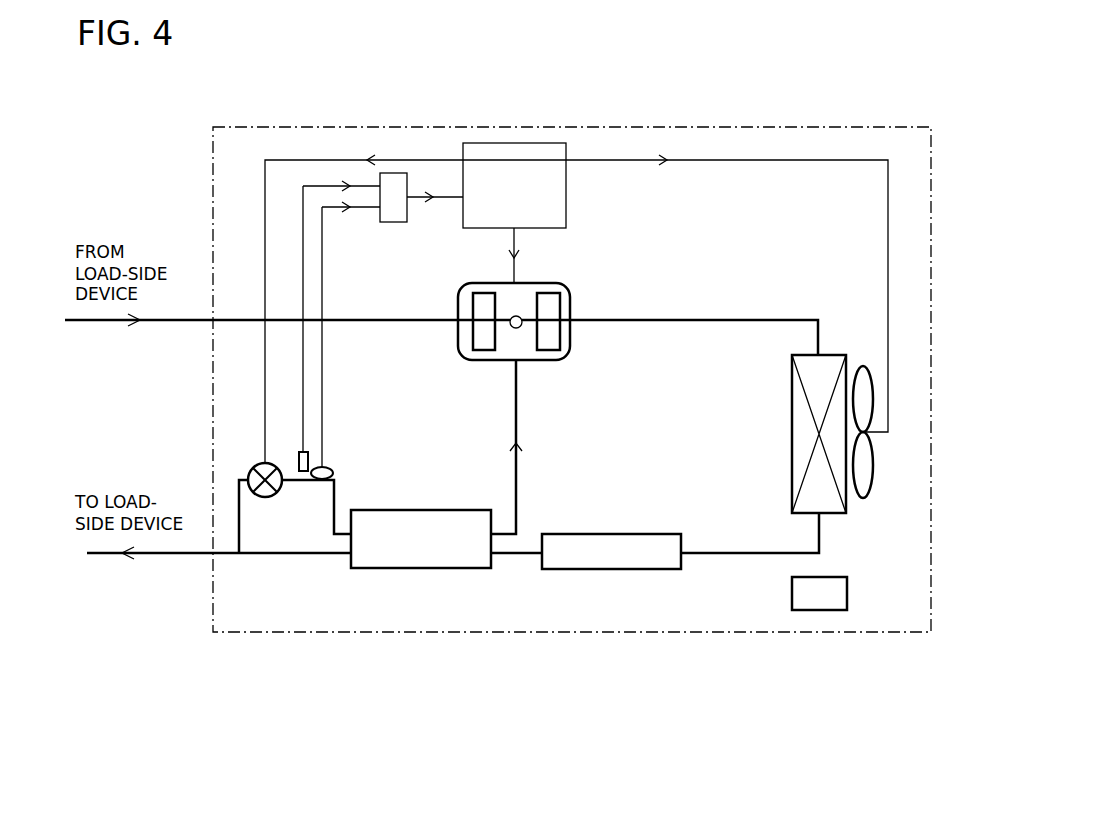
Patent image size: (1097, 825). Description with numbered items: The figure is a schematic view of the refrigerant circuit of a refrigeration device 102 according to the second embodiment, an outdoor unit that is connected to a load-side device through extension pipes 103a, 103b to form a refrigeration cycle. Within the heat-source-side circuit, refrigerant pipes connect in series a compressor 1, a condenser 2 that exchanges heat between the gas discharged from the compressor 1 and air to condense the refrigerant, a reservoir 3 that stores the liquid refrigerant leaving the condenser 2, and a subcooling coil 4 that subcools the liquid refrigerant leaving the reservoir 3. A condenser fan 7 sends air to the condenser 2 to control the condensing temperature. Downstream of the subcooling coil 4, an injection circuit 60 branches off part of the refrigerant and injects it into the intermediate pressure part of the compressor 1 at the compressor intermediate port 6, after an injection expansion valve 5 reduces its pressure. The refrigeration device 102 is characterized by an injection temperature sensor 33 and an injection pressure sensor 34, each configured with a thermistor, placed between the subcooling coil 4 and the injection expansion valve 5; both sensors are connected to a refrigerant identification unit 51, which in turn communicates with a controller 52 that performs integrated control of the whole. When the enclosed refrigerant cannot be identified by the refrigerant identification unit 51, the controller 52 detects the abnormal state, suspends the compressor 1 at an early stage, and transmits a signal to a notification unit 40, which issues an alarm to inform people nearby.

The compressor 1 is at (570, 283).
The condenser 2 is at (835, 355).
The reservoir 3 is at (600, 569).
The subcooling coil 4 is at (401, 568).
The injection expansion valve 5 is at (255, 466).
The compressor intermediate port 6 is at (512, 330).
The condenser fan 7 is at (873, 460).
The injection temperature sensor 33 is at (335, 470).
The injection pressure sensor 34 is at (303, 452).
The notification unit 40 is at (838, 577).
The refrigerant identification unit 51 is at (386, 222).
The controller 52 is at (566, 197).
The injection circuit 60 is at (516, 412).
The refrigeration device 102 is at (280, 634).
The extension pipe 103a is at (155, 322).
The extension pipe 103b is at (150, 555).